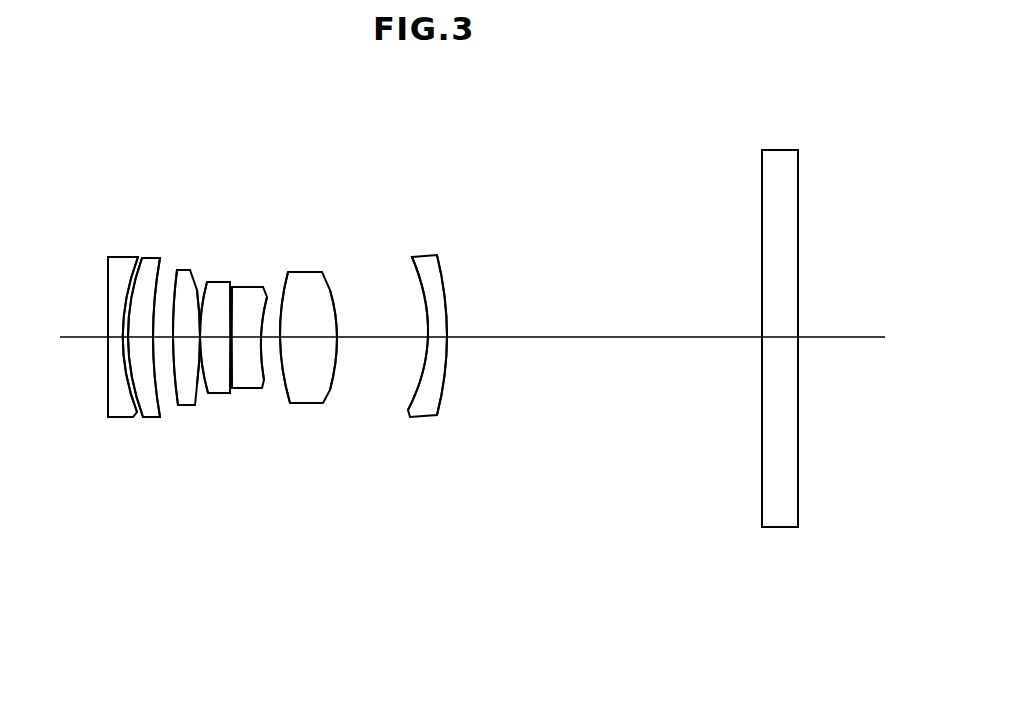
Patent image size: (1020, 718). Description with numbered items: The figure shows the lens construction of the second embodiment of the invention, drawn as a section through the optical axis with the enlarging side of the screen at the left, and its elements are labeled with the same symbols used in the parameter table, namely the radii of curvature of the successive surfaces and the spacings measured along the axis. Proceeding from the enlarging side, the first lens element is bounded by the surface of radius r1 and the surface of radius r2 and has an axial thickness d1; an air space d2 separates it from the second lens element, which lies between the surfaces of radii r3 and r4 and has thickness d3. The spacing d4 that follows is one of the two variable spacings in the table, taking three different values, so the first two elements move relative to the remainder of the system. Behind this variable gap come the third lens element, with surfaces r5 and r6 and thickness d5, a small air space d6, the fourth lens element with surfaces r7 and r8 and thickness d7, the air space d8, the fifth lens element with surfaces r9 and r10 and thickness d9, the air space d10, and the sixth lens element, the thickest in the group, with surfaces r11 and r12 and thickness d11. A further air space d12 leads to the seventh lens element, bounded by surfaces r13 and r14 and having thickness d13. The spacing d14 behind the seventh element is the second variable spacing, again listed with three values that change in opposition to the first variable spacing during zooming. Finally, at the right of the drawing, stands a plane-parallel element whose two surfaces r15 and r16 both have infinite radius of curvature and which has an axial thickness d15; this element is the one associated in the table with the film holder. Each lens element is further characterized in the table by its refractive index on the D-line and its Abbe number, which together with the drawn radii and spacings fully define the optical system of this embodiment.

The radius of curvature of first lens surface r1 is at (108, 303).
The radius of curvature of second lens surface r2 is at (138, 262).
The radius of curvature of third lens surface r3 is at (145, 258).
The radius of curvature of fourth lens surface r4 is at (160, 258).
The radius of curvature of fifth lens surface r5 is at (177, 270).
The radius of curvature of sixth lens surface r6 is at (193, 270).
The radius of curvature of seventh lens surface r7 is at (208, 282).
The radius of curvature of eighth lens surface r8 is at (226, 282).
The radius of curvature of ninth lens surface r9 is at (236, 287).
The radius of curvature of tenth lens surface r10 is at (258, 287).
The radius of curvature of eleventh lens surface r11 is at (288, 272).
The radius of curvature of twelfth lens surface r12 is at (318, 272).
The radius of curvature of thirteenth lens surface r13 is at (415, 290).
The radius of curvature of fourteenth lens surface r14 is at (442, 290).
The radius of curvature of fifteenth surface r15 is at (762, 233).
The radius of curvature of sixteenth surface r16 is at (798, 233).
The axial spacing of first lens d1 is at (118, 340).
The axial spacing between first and second lenses d2 is at (130, 340).
The axial spacing of second lens d3 is at (142, 340).
The variable axial spacing between second and third lenses d4 is at (163, 340).
The axial spacing of third lens d5 is at (184, 340).
The axial spacing between third and fourth lenses d6 is at (200, 340).
The axial spacing of fourth lens d7 is at (216, 340).
The axial spacing between fourth and fifth lenses d8 is at (232, 340).
The axial spacing of fifth lens d9 is at (248, 340).
The axial spacing between fifth and sixth lenses d10 is at (273, 340).
The axial spacing of sixth lens d11 is at (310, 340).
The axial spacing between sixth and seventh lenses d12 is at (381, 340).
The axial spacing of seventh lens d13 is at (432, 340).
The variable axial spacing between seventh lens and plane-parallel element d14 is at (607, 340).
The axial spacing of plane-parallel element d15 is at (785, 340).